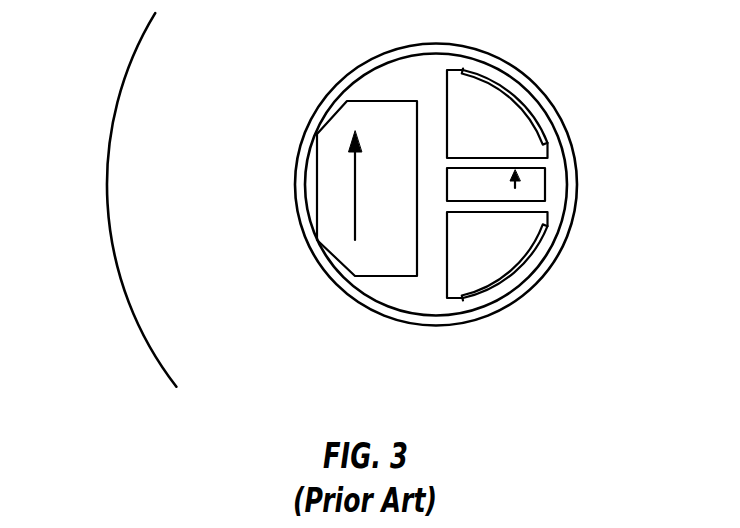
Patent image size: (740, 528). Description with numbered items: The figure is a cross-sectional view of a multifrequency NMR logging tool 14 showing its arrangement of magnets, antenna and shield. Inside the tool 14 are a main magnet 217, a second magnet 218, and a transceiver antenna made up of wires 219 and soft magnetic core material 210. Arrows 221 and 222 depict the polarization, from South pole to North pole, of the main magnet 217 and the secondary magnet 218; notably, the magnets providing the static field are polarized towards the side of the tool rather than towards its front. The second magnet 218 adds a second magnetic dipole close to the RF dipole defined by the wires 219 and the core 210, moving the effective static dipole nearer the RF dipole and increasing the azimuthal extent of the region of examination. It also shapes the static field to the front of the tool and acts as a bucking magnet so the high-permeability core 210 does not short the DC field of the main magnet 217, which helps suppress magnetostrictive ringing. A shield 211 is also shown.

The tool 14 is at (410, 315).
The core material 210 is at (467, 92).
The shield 211 is at (147, 342).
The main magnet 217 is at (342, 248).
The second magnet 218 is at (535, 182).
The wires 219 is at (545, 117).
The arrow 221 is at (407, 198).
The arrow 222 is at (498, 197).